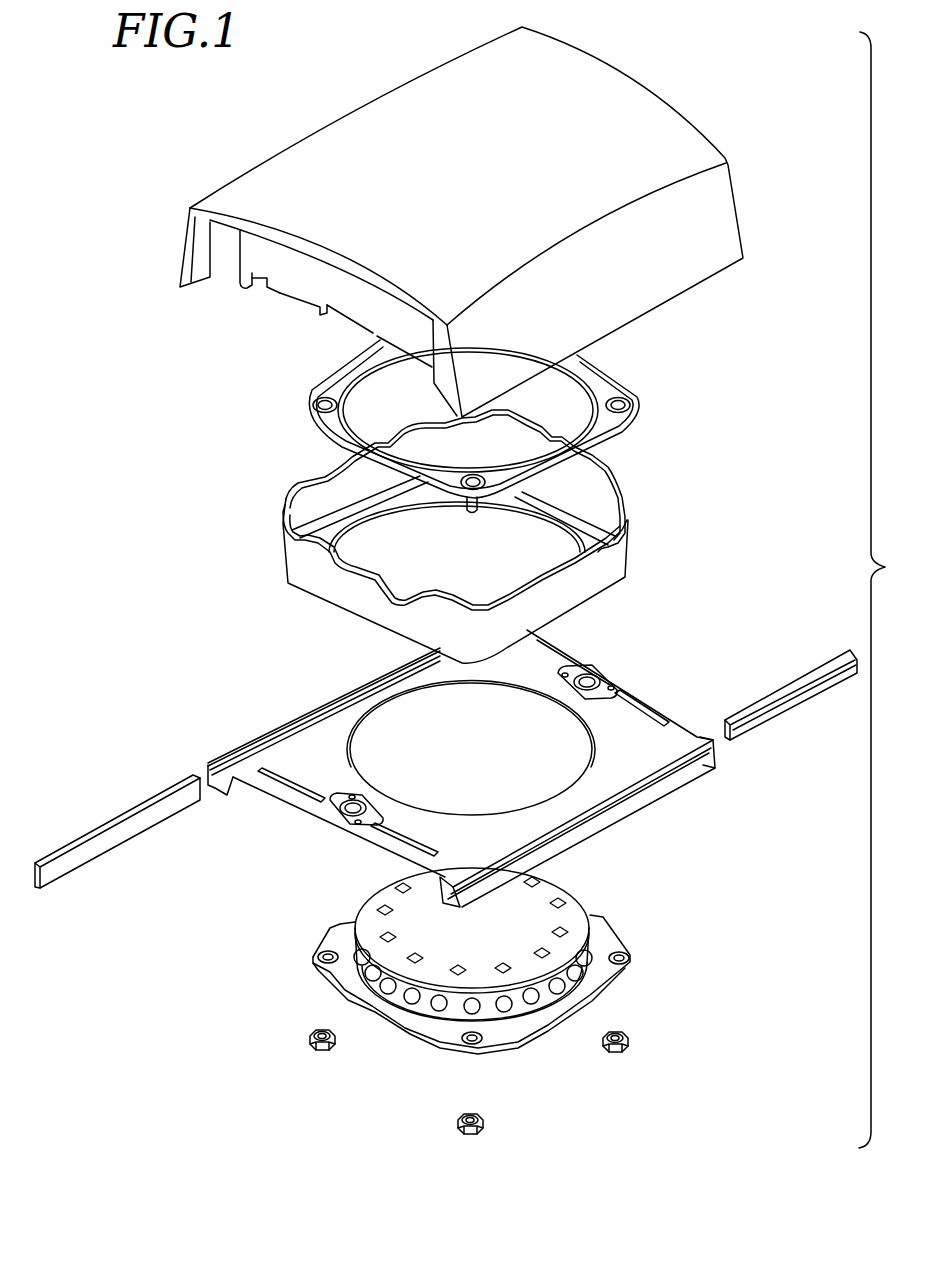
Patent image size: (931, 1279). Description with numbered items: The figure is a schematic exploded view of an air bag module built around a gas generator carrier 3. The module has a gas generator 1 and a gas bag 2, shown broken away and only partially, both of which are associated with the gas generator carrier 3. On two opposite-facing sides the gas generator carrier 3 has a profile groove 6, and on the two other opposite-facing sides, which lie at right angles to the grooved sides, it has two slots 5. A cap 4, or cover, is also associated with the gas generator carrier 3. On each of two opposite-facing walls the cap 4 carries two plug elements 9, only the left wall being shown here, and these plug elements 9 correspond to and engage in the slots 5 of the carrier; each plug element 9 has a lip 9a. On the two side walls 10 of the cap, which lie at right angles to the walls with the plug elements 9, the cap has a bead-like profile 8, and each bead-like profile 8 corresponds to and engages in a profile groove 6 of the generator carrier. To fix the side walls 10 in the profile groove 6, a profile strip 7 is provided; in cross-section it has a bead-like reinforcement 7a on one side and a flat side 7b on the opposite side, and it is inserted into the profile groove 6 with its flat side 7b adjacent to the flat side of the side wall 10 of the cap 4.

The gas generator 1 is at (522, 1025).
The gas bag 2 is at (613, 507).
The gas generator carrier 3 is at (305, 770).
The cap 4 is at (650, 292).
The slot 5 is at (300, 792).
The profile groove 6 is at (293, 725).
The profile strip 7 is at (148, 800).
The bead-like reinforcement 7a is at (773, 710).
The flat side 7b is at (723, 723).
The bead-like profile 8 is at (238, 290).
The plug element 9 is at (283, 300).
The lip 9a is at (330, 308).
The side wall 10 is at (205, 250).